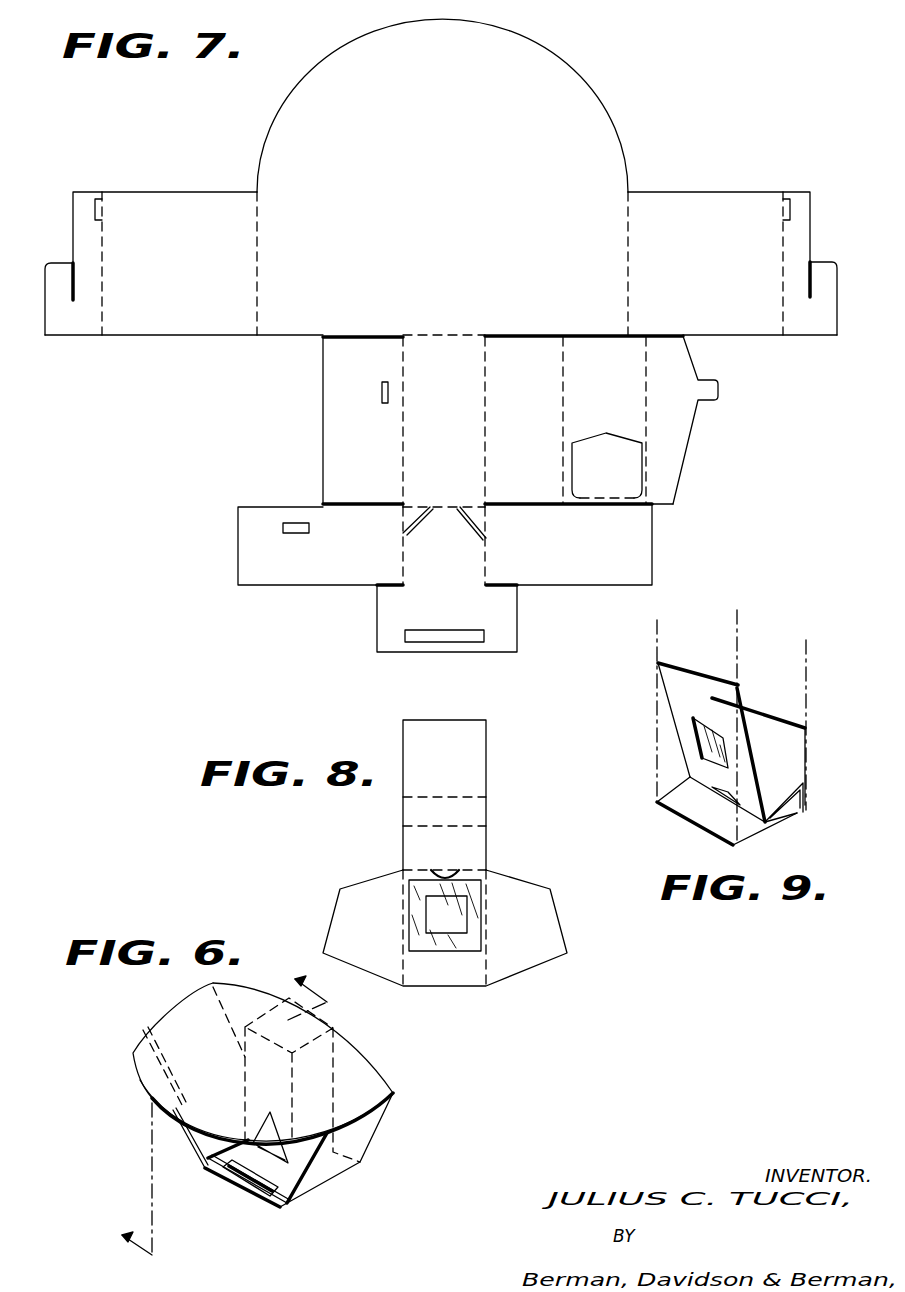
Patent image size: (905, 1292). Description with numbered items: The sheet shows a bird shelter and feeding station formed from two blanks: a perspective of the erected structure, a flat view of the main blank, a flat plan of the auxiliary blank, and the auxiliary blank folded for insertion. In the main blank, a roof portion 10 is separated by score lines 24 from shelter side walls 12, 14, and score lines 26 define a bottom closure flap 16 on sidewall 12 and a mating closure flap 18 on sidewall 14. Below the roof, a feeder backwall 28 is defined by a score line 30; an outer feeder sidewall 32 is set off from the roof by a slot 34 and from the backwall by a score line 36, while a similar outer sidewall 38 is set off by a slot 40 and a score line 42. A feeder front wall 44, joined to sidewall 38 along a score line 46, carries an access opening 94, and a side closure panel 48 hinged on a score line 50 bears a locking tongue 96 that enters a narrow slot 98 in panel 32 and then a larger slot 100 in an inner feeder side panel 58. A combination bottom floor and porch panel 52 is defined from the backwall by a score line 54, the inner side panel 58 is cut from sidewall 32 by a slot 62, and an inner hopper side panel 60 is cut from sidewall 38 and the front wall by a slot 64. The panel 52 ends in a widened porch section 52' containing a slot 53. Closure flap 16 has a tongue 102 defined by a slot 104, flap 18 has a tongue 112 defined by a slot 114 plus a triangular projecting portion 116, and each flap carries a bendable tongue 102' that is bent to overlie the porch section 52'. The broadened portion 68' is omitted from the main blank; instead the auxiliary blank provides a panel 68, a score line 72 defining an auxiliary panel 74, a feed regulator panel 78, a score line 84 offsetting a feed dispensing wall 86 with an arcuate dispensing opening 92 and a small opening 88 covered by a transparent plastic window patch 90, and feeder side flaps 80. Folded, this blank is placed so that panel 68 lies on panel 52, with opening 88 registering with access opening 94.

In FIG. 7, the roof portion 10 is at (428, 129).
In FIG. 6, the roof portion 10 is at (230, 1089).
In FIG. 7, the shelter side wall 12 is at (192, 280).
In FIG. 6, the shelter side wall 12 is at (196, 1157).
In FIG. 7, the shelter side wall 14 is at (702, 270).
In FIG. 6, the shelter side wall 14 is at (357, 1150).
In FIG. 7, the bottom closure flap 16 is at (72, 336).
In FIG. 7, the mating closure flap 18 is at (806, 336).
In FIG. 7, the score lines 24 is at (259, 252).
In FIG. 7, the score lines 26 is at (104, 253).
In FIG. 7, the feeder backwall 28 is at (451, 438).
In FIG. 7, the score line 30 is at (452, 334).
In FIG. 7, the outer feeder sidewall 32 is at (369, 436).
In FIG. 7, the slot 34 is at (362, 334).
In FIG. 7, the score line 36 is at (405, 392).
In FIG. 7, the outer sidewall 38 is at (528, 416).
In FIG. 7, the slot 40 is at (530, 334).
In FIG. 7, the score line 42 is at (488, 386).
In FIG. 7, the feeder front wall 44 is at (612, 393).
In FIG. 7, the score line 46 is at (562, 431).
In FIG. 7, the side closure panel 48 is at (686, 406).
In FIG. 7, the score line 50 is at (645, 424).
In FIG. 7, the combination bottom floor and porch panel 52 is at (447, 551).
In FIG. 7, the porch or perch forming section 52' is at (421, 618).
In FIG. 7, the slot 53 is at (443, 641).
In FIG. 6, the slot 53 is at (247, 1186).
In FIG. 7, the score line 54 is at (453, 506).
In FIG. 7, the inner feeder side panel 58 is at (357, 570).
In FIG. 7, the inner hopper side panel 60 is at (582, 556).
In FIG. 7, the slot 62 is at (358, 503).
In FIG. 7, the slot 64 is at (528, 505).
In FIG. 8, the panel 68 is at (444, 795).
In FIG. 9, the panel 68 is at (715, 811).
In FIG. 6, the broadened portion 68' is at (266, 1178).
In FIG. 8, the score line 72 is at (470, 797).
In FIG. 8, the auxiliary panel 74 is at (456, 818).
In FIG. 9, the auxiliary panel 74 is at (806, 793).
In FIG. 8, the feed regulator panel 78 is at (456, 859).
In FIG. 9, the feed regulator panel 78 is at (792, 818).
In FIG. 8, the feeder side flaps 80 is at (378, 926).
In FIG. 9, the feeder side flaps 80 is at (690, 672).
In FIG. 8, the score line 84 is at (474, 870).
In FIG. 8, the feed dispensing wall 86 is at (424, 980).
In FIG. 9, the feed dispensing wall 86 is at (712, 702).
In FIG. 8, the opening 88 is at (461, 917).
In FIG. 9, the opening 88 is at (694, 733).
In FIG. 8, the transparent plastic window patch 90 is at (440, 958).
In FIG. 8, the arcuate dispensing opening 92 is at (432, 869).
In FIG. 9, the arcuate dispensing opening 92 is at (730, 797).
In FIG. 7, the access opening 94 is at (636, 482).
In FIG. 7, the locking tongue 96 is at (719, 392).
In FIG. 7, the narrow slot 98 is at (381, 391).
In FIG. 7, the larger slot 100 is at (310, 528).
In FIG. 7, the tongue 102 is at (48, 284).
In FIG. 7, the bendable tongue 102' is at (442, 185).
In FIG. 7, the slot 104 is at (75, 282).
In FIG. 7, the tongue 112 is at (839, 272).
In FIG. 7, the slot 114 is at (808, 284).
In FIG. 7, the triangular projecting portion 116 is at (462, 520).